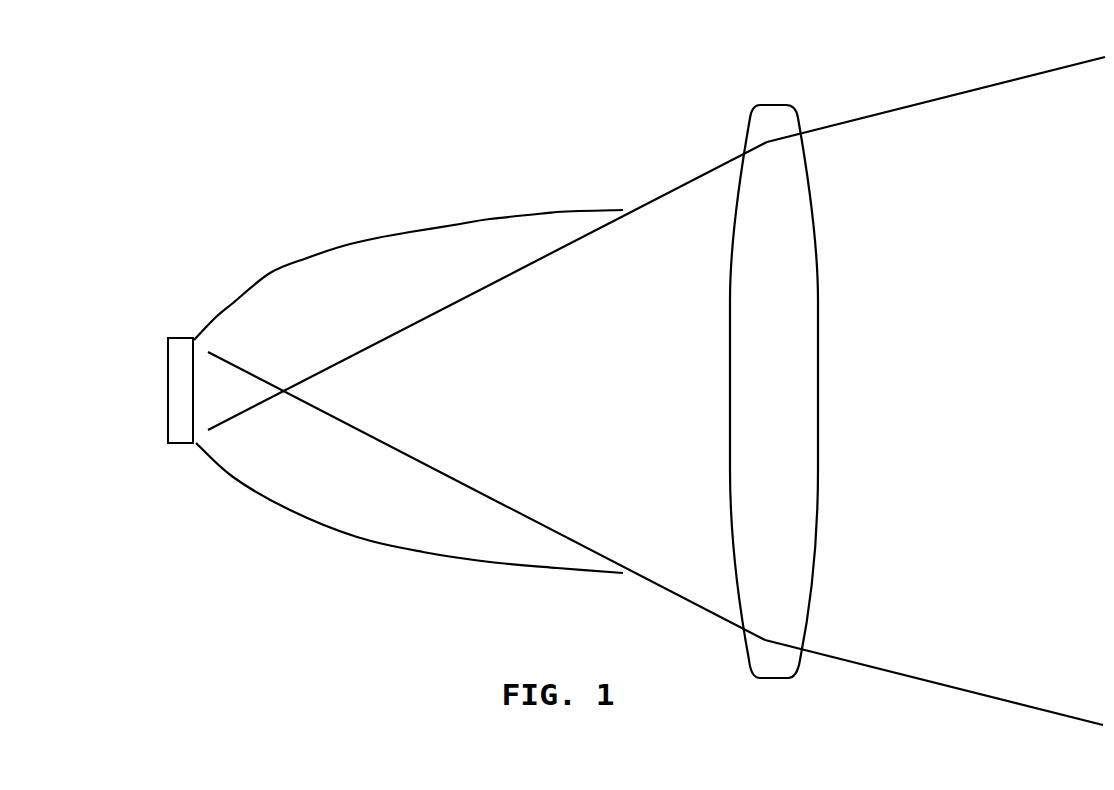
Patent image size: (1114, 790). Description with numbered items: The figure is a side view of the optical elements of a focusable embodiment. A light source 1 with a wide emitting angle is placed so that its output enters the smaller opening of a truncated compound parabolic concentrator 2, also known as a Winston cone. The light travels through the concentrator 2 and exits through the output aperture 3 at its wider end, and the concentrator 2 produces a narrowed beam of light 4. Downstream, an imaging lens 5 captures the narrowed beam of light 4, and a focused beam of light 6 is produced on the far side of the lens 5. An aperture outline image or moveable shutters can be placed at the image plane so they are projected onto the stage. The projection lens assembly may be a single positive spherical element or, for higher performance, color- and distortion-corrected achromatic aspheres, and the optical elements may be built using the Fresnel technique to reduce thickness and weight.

The light source 1 is at (183, 332).
The truncated compound parabolic concentrator 2 is at (405, 225).
The output aperture 3 is at (622, 197).
The narrowed beam of light 4 is at (702, 168).
The imaging lens 5 is at (750, 105).
The focused beam of light 6 is at (888, 103).